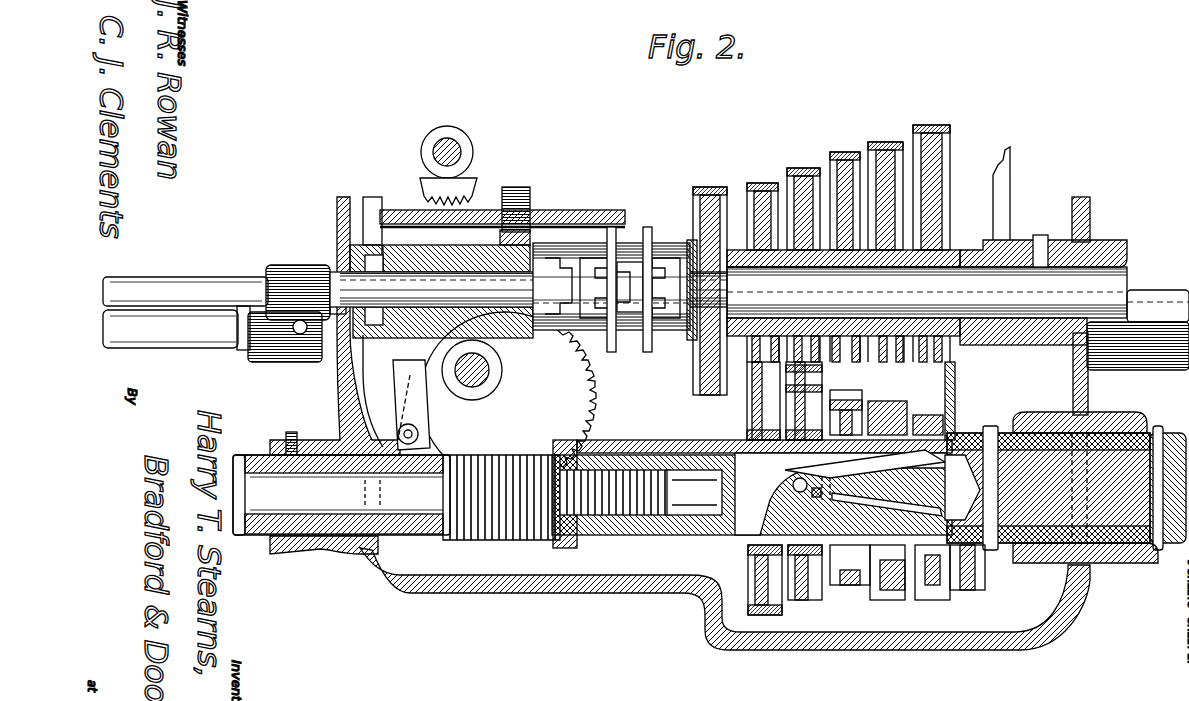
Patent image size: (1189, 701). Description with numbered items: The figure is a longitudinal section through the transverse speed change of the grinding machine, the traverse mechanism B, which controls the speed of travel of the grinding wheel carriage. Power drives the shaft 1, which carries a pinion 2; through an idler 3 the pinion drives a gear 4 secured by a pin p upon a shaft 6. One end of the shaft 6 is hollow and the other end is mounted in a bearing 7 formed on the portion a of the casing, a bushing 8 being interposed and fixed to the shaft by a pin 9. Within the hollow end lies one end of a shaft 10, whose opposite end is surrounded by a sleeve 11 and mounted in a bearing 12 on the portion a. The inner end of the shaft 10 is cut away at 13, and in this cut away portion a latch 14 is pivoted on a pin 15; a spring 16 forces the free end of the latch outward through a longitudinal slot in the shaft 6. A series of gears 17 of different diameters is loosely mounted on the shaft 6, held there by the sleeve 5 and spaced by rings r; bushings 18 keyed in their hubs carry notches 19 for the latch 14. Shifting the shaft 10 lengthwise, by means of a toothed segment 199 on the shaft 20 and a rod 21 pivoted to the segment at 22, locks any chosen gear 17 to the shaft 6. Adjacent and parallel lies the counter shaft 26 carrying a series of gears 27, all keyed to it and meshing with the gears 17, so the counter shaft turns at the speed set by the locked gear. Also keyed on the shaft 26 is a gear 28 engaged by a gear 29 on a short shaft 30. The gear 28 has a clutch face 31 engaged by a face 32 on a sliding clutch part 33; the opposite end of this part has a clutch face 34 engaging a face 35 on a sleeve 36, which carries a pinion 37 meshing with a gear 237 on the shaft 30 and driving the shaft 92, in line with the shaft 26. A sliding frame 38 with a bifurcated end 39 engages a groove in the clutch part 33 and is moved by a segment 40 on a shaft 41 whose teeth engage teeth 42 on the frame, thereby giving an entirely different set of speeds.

The shaft 1 is at (210, 345).
The shaft 92 is at (213, 280).
The pinion 2 is at (992, 442).
The idler 3 is at (449, 127).
The gear 4 is at (982, 575).
The sleeve 5 is at (672, 443).
The shaft 6 is at (1135, 517).
The bearing 7 is at (1112, 560).
The bushing 8 is at (1122, 432).
The pin 9 is at (1160, 434).
The shaft 10 is at (697, 500).
The sleeve 11 is at (284, 553).
The bearing 12 is at (337, 546).
The cut away portion 13 is at (769, 476).
The latch 14 is at (945, 490).
The pin 15 is at (801, 479).
The spring 16 is at (950, 512).
The gears 17 is at (857, 565).
The bushings 18 is at (883, 438).
The notches 19 is at (905, 433).
The shaft 20 is at (472, 375).
The rod 21 is at (418, 406).
The pivot 22 is at (410, 442).
The counter shaft 26 is at (810, 272).
The gears 27 is at (880, 142).
The gear 28 is at (710, 190).
The gear 29 is at (692, 360).
The short shaft 30 is at (598, 347).
The clutch face 31 is at (683, 243).
The clutch face 32 is at (668, 348).
The sliding clutch part 33 is at (663, 242).
The clutch face 34 is at (600, 245).
The clutch face 35 is at (563, 244).
The sleeve 36 is at (408, 242).
The pinion 37 is at (505, 240).
The sliding frame 38 is at (508, 188).
The gear 237 is at (520, 210).
The bifurcated end 39 is at (630, 352).
The segment 40 is at (432, 178).
The shaft 41 is at (455, 140).
The teeth 42 is at (470, 212).
The toothed segment 199 is at (535, 405).
The portion a is at (725, 599).
The traverse mechanism B is at (602, 624).
The rings r is at (865, 437).
The pin p is at (1003, 444).